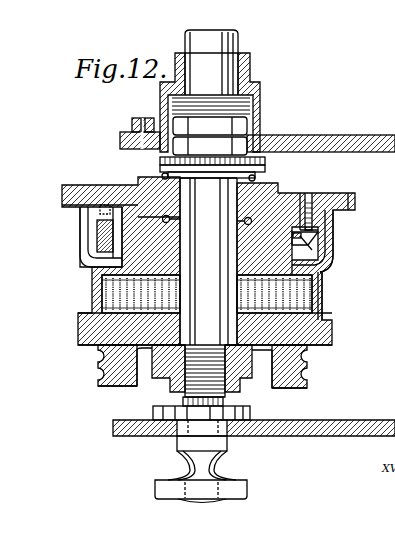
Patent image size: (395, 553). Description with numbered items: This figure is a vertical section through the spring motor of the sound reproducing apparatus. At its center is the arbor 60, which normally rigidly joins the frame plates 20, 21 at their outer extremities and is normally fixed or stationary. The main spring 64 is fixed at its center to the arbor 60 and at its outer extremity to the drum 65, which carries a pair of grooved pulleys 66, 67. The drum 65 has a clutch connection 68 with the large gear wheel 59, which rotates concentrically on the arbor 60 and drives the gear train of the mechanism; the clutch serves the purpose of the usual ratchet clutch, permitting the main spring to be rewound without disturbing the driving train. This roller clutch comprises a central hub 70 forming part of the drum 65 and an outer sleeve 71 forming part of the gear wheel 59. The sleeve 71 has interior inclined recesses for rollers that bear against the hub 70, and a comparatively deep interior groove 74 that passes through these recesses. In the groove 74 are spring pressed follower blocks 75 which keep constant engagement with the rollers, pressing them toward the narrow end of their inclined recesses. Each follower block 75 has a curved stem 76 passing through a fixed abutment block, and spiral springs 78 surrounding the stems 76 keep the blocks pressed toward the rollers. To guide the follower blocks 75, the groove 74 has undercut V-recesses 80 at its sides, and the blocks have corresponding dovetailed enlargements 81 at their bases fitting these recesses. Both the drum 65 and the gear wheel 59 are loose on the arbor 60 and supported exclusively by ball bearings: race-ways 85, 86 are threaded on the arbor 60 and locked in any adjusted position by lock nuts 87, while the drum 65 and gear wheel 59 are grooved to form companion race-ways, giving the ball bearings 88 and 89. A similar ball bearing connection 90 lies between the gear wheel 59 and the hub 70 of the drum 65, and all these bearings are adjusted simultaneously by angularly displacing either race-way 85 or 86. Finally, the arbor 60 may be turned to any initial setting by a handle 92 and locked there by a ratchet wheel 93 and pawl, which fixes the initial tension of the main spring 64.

The frame plate 20 is at (258, 432).
The frame plate 21 is at (318, 143).
The gear wheel 59 is at (332, 199).
The arbor 60 is at (233, 33).
The main spring 64 is at (313, 300).
The drum 65 is at (330, 319).
The grooved pulley 66 is at (308, 356).
The grooved pulley 67 is at (308, 375).
The clutch connection 68 is at (80, 250).
The central hub 70 is at (208, 261).
The outer sleeve 71 is at (328, 254).
The interior groove 74 is at (312, 240).
The follower block 75 is at (90, 262).
The curved stem 76 is at (330, 270).
The spiral spring 78 is at (326, 274).
The undercut V-recess 80 is at (320, 230).
The dovetailed enlargement 81 is at (86, 214).
The ball bearing race-way 85 is at (265, 161).
The ball bearing race-way 86 is at (249, 368).
The lock nut 87 is at (250, 118).
The ball bearing 88 is at (262, 178).
The ball bearing 89 is at (161, 368).
The ball bearing connection 90 is at (246, 223).
The handle 92 is at (157, 490).
The ratchet wheel 93 is at (252, 414).